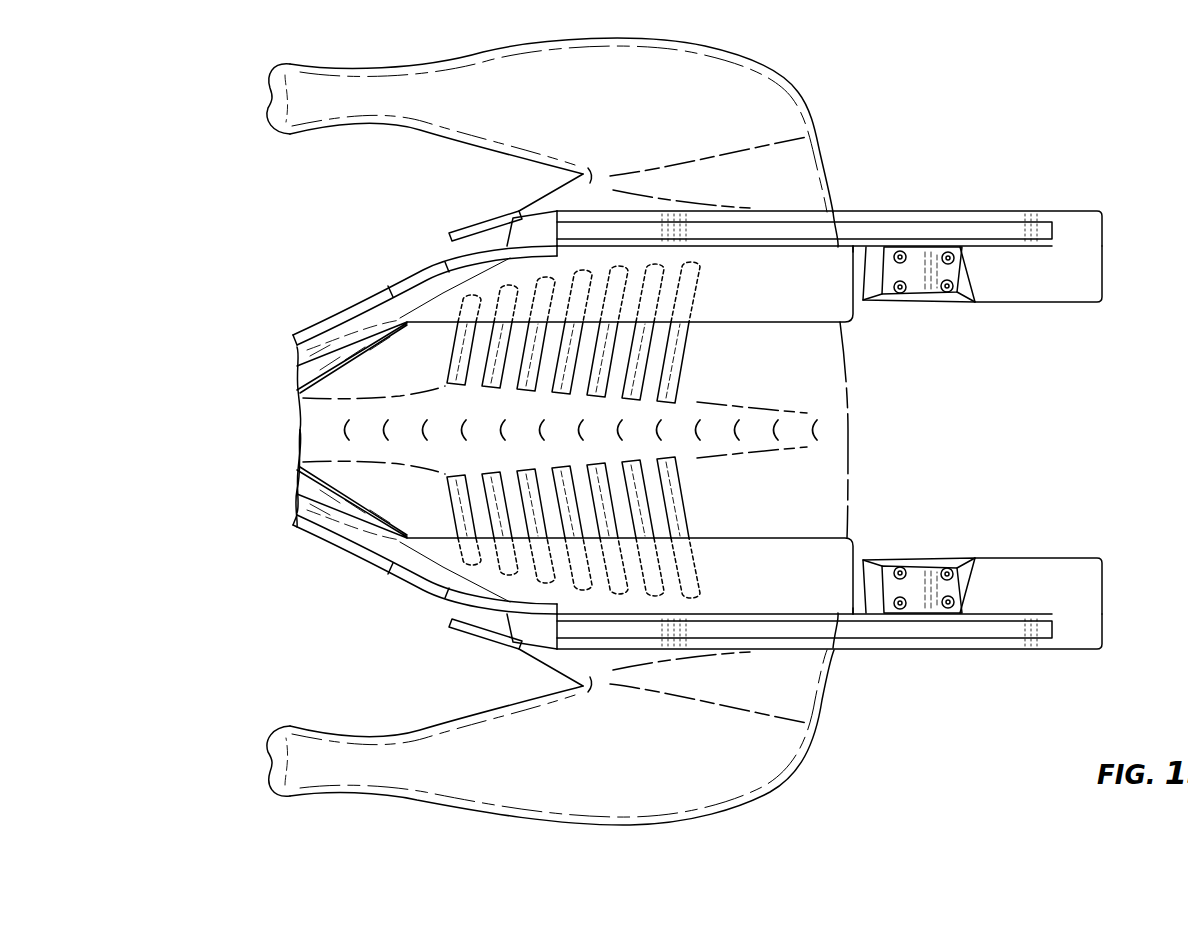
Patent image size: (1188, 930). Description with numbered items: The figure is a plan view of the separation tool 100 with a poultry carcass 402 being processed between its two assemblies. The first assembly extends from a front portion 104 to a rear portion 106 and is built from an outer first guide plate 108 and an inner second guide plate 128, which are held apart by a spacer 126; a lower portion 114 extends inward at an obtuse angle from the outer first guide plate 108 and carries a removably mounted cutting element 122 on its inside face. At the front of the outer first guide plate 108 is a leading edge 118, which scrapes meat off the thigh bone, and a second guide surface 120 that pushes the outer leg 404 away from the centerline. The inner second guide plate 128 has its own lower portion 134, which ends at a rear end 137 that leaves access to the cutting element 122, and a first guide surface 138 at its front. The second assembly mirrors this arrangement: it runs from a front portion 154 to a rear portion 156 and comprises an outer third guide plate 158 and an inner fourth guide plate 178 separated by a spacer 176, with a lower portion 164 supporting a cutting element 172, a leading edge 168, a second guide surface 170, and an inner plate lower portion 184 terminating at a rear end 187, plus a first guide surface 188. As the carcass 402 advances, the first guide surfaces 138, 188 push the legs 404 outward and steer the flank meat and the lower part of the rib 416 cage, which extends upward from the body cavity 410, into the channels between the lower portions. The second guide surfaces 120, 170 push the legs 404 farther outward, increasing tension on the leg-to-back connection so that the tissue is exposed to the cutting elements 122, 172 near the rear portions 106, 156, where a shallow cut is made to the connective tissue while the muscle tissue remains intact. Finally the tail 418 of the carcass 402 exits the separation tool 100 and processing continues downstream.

The separation tool 100 is at (277, 432).
The front portion 104 is at (293, 215).
The rear portion 106 is at (1134, 228).
The outer first guide plate 108 is at (853, 213).
The lower portion 114 is at (1043, 283).
The leading edge 118 is at (507, 243).
The second guide surface 120 is at (468, 226).
The cutting element 122 is at (922, 298).
The spacer 126 is at (905, 228).
The inner second guide plate 128 is at (602, 232).
The lower portion 134 is at (777, 307).
The rear end 137 is at (862, 330).
The first guide surface 138 is at (328, 314).
The front portion 154 is at (348, 635).
The rear portion 156 is at (1125, 593).
The outer third guide plate 158 is at (812, 650).
The lower portion 164 is at (1047, 577).
The leading edge 168 is at (517, 632).
The second guide surface 170 is at (458, 634).
The cutting element 172 is at (925, 558).
The spacer 176 is at (873, 637).
The inner fourth guide plate 178 is at (707, 617).
The lower portion 184 is at (797, 560).
The rear end 187 is at (862, 527).
The first guide surface 188 is at (372, 575).
The poultry carcass 402 is at (877, 725).
The leg 404 is at (378, 40).
The body cavity 410 is at (815, 368).
The rib 416 is at (698, 368).
The tail 418 is at (258, 473).